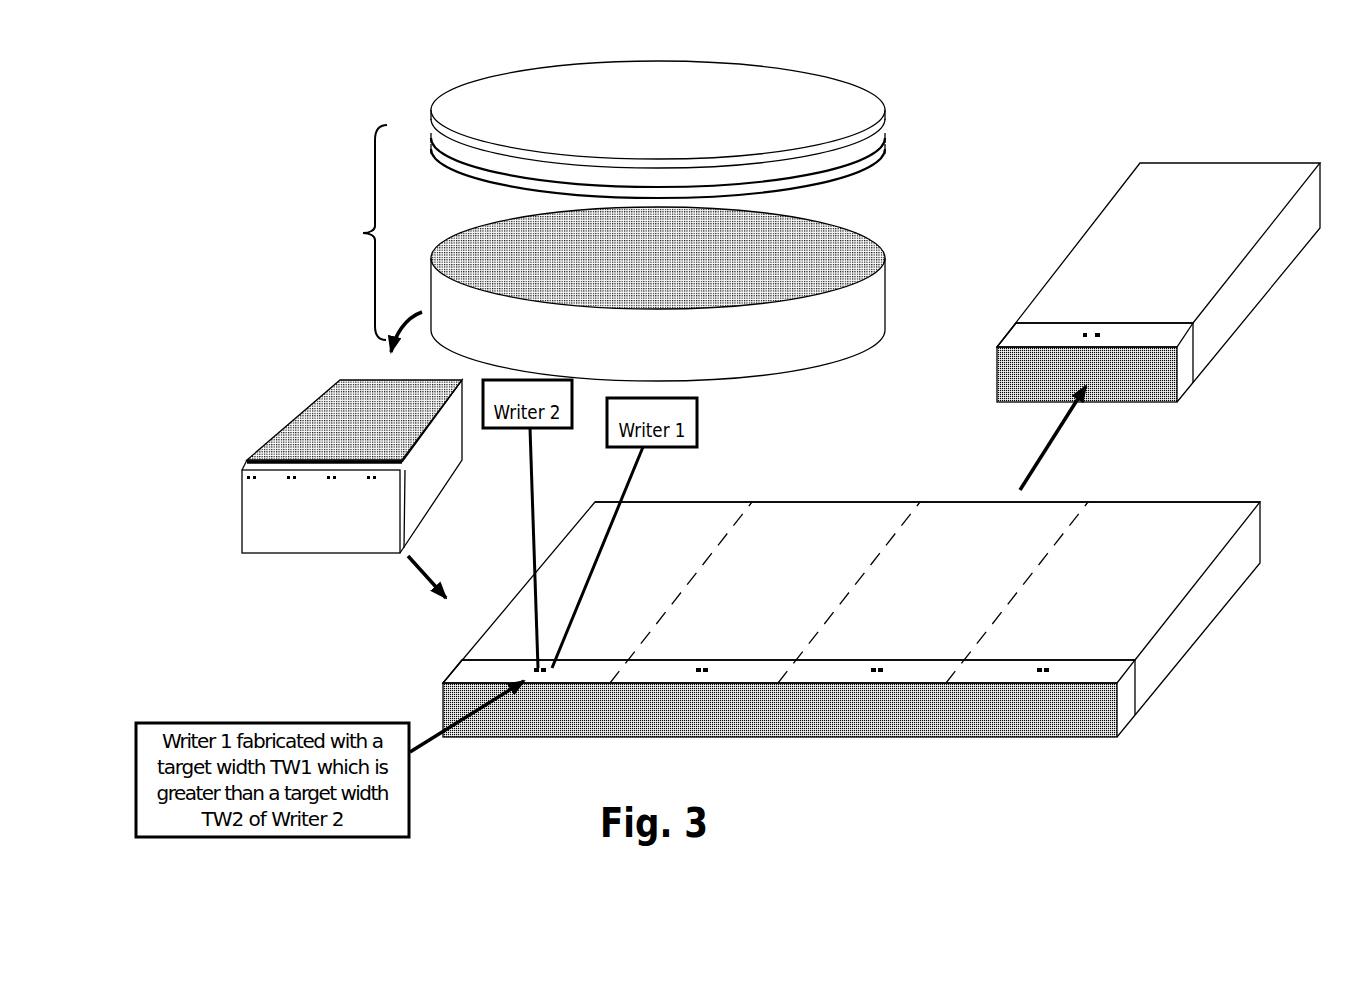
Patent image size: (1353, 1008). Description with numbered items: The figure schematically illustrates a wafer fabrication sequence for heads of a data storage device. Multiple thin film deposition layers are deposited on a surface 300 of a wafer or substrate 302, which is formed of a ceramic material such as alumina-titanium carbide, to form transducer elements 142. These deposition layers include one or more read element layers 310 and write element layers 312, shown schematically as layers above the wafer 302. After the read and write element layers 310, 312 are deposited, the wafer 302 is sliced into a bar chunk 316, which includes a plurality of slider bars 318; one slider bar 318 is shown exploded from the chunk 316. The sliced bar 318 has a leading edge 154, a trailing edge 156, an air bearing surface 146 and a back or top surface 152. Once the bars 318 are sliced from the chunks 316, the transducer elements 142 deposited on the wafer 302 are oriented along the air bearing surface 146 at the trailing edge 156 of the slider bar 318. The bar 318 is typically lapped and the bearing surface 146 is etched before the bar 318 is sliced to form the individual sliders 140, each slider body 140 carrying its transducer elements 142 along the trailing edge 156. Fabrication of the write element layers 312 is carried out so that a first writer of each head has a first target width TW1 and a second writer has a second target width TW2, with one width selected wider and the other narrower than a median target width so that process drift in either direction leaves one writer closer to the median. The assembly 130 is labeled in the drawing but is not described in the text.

The slider wafer / row bar assembly 130 is at (1174, 486).
The slider 140 is at (1230, 134).
The transducer elements 142 is at (365, 494).
The bearing surface 146 is at (881, 423).
The back/top surface 152 is at (1183, 657).
The leading edge 154 is at (808, 500).
The trailing edge 156 is at (998, 724).
The surface 300 is at (658, 258).
The wafer 302 is at (884, 252).
The read element layers 310 is at (887, 158).
The write element layers 312 is at (889, 121).
The bar chunk 316 is at (330, 363).
The slider bar 318 is at (246, 462).